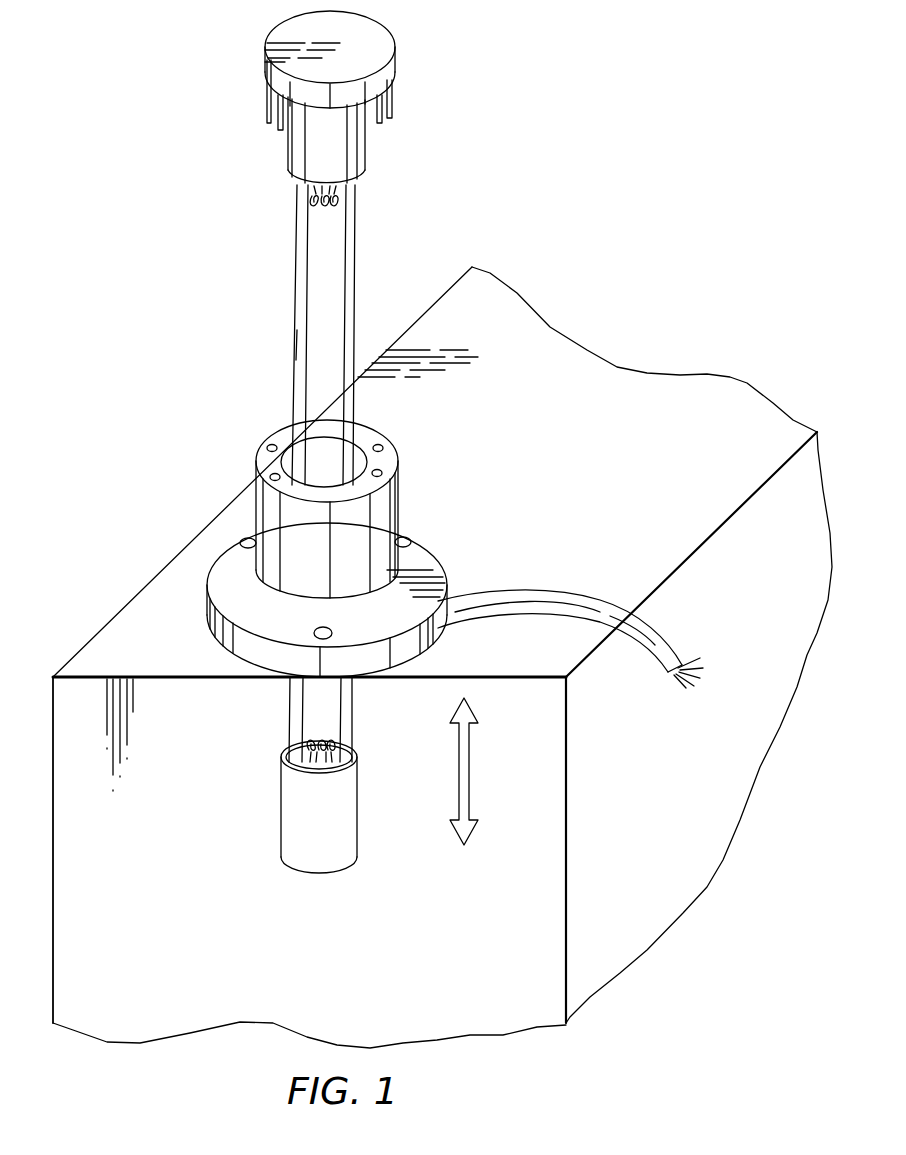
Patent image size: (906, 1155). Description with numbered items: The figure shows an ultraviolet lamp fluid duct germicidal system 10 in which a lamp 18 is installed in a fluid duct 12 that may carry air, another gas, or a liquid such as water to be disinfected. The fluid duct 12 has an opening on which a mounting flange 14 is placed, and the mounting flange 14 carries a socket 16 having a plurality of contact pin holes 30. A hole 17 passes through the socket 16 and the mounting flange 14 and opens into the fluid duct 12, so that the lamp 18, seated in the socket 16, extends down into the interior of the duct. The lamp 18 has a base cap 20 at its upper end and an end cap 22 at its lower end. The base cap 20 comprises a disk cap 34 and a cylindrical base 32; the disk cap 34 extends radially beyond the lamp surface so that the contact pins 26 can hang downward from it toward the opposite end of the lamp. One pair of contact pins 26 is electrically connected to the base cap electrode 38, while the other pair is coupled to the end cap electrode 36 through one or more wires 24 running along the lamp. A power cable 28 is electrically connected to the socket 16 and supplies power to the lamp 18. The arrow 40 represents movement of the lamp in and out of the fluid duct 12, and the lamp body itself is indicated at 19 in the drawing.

The ultraviolet lamp fluid duct germicidal system 10 is at (275, 383).
The fluid duct 12 is at (646, 463).
The mounting flange 14 is at (427, 567).
The socket 16 is at (398, 473).
The hole 17 is at (360, 435).
The lamp 18 is at (363, 405).
The probe tube 19 is at (295, 345).
The base cap 20 is at (397, 23).
The end cap 22 is at (293, 798).
The wire 24 is at (297, 263).
The contact pins 26 is at (279, 130).
The power cable 28 is at (657, 630).
The contact pin holes 30 is at (385, 448).
The cylindrical base 32 is at (293, 152).
The disk cap 34 is at (399, 58).
The end cap electrode 36 is at (320, 740).
The base cap electrode 38 is at (330, 198).
The arrow 40 is at (465, 767).